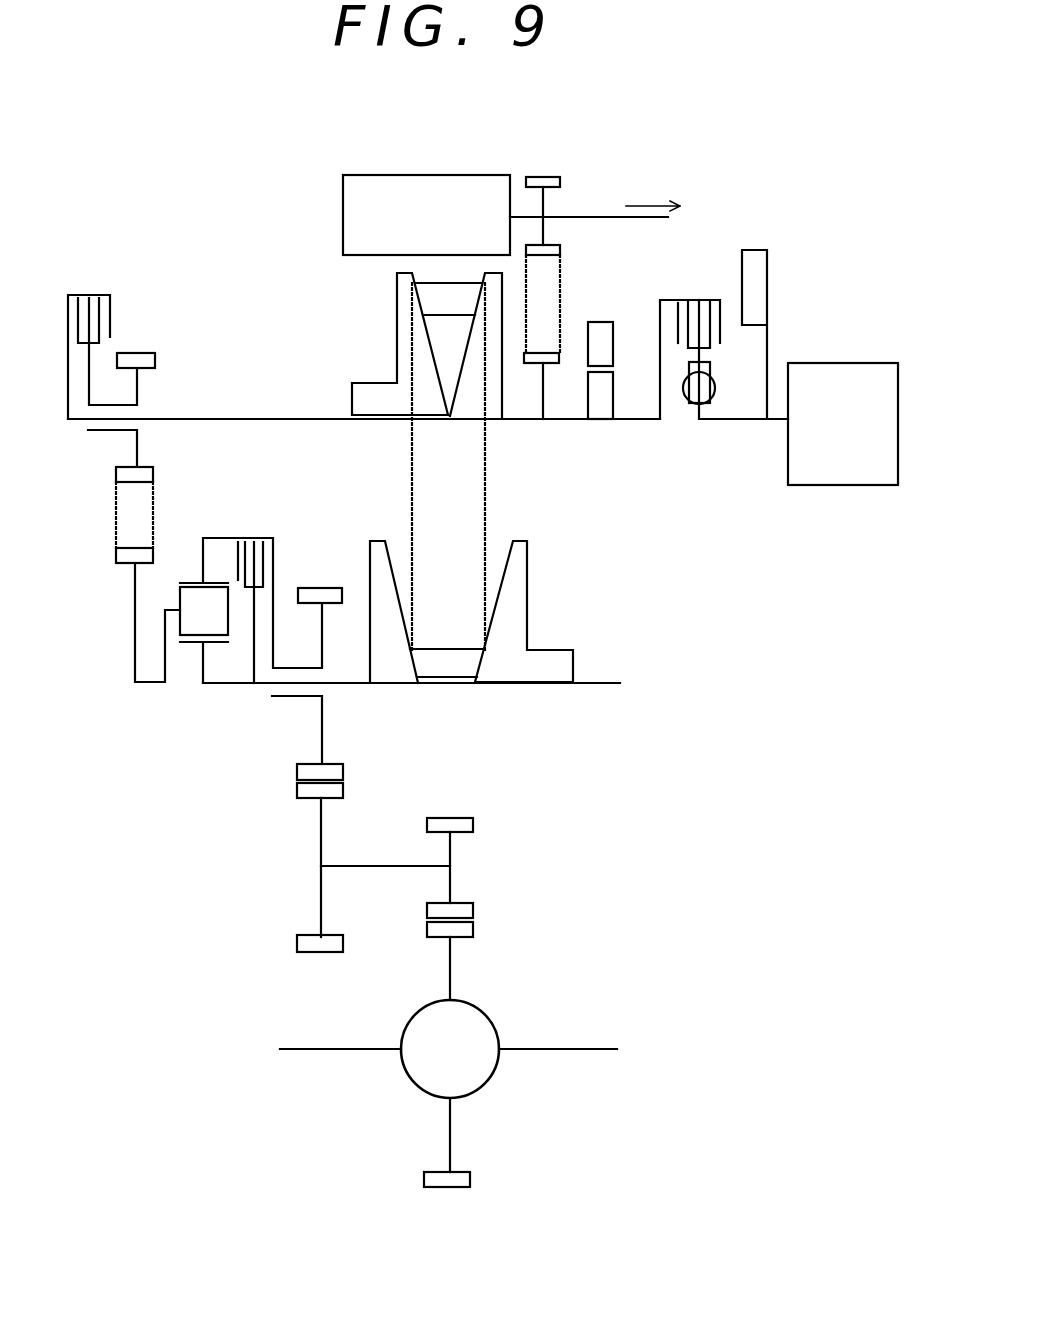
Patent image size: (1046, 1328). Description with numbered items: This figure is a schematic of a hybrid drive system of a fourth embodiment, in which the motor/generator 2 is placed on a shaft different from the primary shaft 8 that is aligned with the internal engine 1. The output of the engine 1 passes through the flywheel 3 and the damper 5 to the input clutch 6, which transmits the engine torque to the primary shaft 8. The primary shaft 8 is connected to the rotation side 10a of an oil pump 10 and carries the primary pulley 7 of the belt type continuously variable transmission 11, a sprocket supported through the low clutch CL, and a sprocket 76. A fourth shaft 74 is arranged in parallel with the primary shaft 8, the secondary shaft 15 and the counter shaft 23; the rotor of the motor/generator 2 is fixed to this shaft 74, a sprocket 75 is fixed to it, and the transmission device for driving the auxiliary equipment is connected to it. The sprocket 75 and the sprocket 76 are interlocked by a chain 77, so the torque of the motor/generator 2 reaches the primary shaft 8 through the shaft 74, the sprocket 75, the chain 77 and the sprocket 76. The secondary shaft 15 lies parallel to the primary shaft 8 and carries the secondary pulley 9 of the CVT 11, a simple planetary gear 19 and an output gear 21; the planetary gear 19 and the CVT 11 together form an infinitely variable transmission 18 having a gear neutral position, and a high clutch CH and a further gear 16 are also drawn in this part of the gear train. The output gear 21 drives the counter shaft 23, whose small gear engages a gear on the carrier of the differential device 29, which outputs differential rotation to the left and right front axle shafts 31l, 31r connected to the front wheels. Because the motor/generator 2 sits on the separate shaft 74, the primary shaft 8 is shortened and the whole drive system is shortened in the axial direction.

The internal engine 1 is at (840, 363).
The motor/generator 2 is at (490, 168).
The flywheel 3 is at (768, 272).
The damper 5 is at (715, 388).
The input clutch 6 is at (683, 305).
The primary pulley 7 is at (358, 340).
The primary shaft 8 is at (295, 418).
The secondary pulley 9 is at (546, 588).
The oil pump 10 is at (602, 320).
The rotation side of the oil pump 10a is at (613, 404).
The belt type continuously variable transmission 11 is at (475, 700).
The secondary shaft 15 is at (597, 685).
The gear 16 is at (120, 572).
The infinitely variable transmission 18 is at (227, 240).
The simple planetary gear 19 is at (187, 657).
The output gear 21 is at (322, 586).
The counter shaft 23 is at (387, 864).
The differential device 29 is at (492, 1022).
The front axle shaft 31l is at (344, 1050).
The front axle shaft 31r is at (562, 1050).
The fourth shaft 74 is at (600, 216).
The sprocket 75 is at (556, 176).
The sprocket 76 is at (548, 364).
The chain 77 is at (560, 305).
The low clutch CL is at (100, 292).
The high clutch CH is at (245, 540).